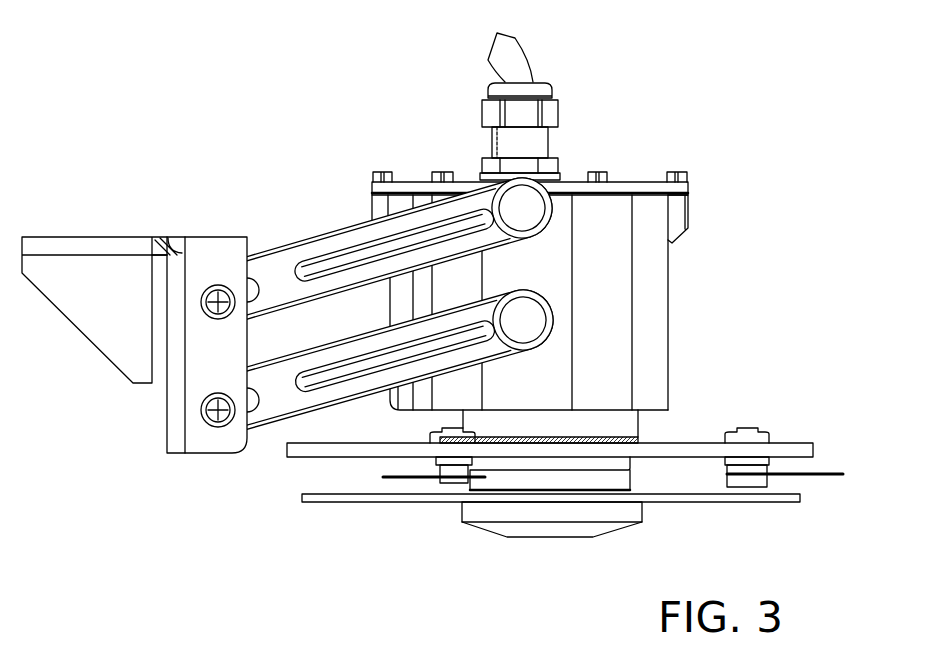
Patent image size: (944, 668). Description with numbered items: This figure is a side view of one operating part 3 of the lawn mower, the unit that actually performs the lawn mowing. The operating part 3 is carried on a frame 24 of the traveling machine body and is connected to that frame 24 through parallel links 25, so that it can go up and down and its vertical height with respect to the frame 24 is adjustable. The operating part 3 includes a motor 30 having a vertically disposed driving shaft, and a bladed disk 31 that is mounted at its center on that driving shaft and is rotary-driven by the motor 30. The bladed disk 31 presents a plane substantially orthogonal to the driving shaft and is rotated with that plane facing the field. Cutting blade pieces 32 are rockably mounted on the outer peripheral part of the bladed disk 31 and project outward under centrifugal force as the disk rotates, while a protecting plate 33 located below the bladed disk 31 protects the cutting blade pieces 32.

The operating part 3 is at (703, 100).
The frame 24 is at (110, 237).
The parallel links 25 is at (337, 232).
The motor 30 is at (668, 307).
The bladed disk 31 is at (706, 443).
The cutting blade pieces 32 is at (383, 477).
The protecting plate 33 is at (803, 498).